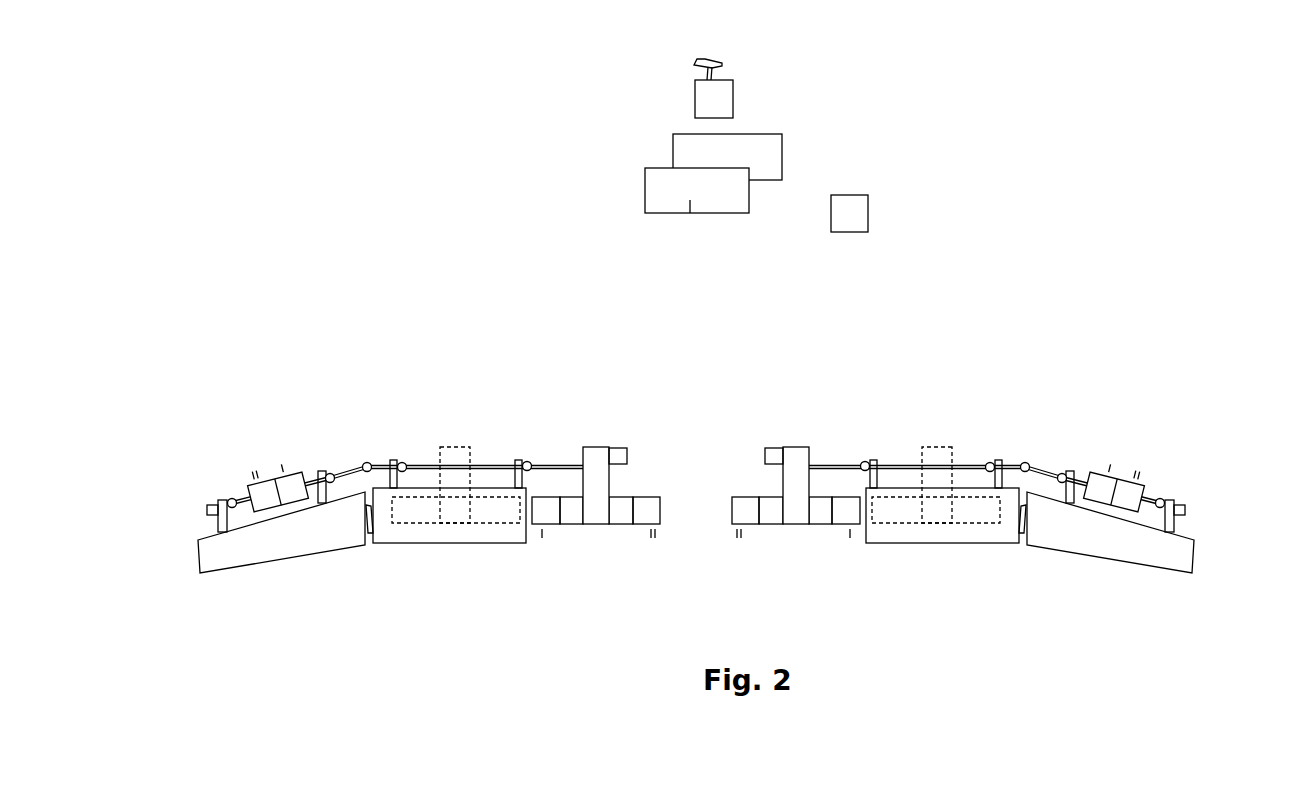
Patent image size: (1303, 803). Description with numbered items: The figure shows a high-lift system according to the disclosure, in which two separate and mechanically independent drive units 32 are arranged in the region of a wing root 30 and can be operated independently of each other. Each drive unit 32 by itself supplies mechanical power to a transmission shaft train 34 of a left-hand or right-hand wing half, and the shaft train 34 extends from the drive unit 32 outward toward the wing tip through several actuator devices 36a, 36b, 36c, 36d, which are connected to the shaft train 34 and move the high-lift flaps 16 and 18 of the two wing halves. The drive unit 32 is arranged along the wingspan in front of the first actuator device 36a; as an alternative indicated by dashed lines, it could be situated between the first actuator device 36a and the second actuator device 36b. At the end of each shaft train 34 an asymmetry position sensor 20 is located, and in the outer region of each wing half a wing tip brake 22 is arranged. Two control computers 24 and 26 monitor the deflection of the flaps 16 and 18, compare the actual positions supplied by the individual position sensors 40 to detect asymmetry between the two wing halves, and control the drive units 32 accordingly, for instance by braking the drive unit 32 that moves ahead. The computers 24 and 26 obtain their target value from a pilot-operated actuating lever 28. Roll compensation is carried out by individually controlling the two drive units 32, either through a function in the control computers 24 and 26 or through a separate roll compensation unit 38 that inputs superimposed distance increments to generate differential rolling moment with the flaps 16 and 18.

The high-lift flap 16 is at (445, 540).
The high-lift flap 18 is at (283, 547).
The asymmetry position sensor 20 is at (207, 508).
The wing tip brake 22 is at (1116, 464).
The control computer 24 is at (673, 214).
The control computer 26 is at (770, 130).
The actuating lever 28 is at (727, 98).
The wing root 30 is at (690, 533).
The drive unit 32 is at (600, 448).
The transmission shaft train 34 is at (425, 458).
The first actuator device 36a is at (525, 462).
The second actuator device 36b is at (402, 463).
The actuator device 36c is at (328, 476).
The actuator device 36d is at (232, 499).
The roll compensation unit 38 is at (862, 210).
The position sensor 40 is at (773, 450).